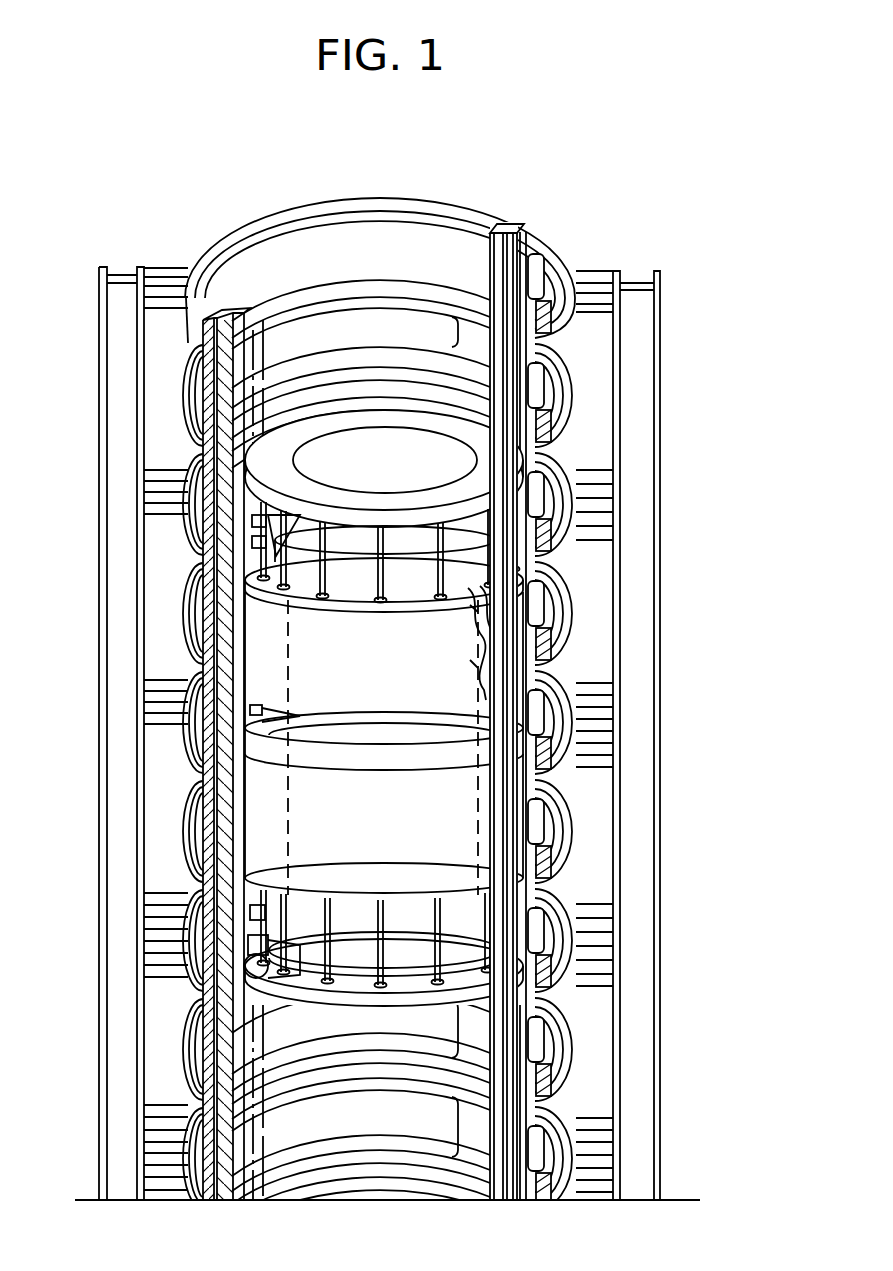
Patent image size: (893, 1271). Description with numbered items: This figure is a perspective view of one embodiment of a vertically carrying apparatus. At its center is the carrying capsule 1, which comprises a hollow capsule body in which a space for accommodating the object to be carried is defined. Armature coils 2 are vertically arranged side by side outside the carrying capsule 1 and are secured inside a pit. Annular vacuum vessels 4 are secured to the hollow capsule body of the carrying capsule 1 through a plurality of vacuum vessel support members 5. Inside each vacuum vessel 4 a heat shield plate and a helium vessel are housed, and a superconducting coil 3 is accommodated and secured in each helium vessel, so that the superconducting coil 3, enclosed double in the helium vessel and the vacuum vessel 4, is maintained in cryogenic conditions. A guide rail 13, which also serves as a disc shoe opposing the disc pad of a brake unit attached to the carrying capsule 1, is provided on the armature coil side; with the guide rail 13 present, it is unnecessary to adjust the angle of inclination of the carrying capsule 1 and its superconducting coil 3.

The carrying capsule 1 is at (402, 410).
The armature coils 2 is at (566, 329).
The superconducting coil 3 is at (505, 685).
The annular vacuum vessels 4 is at (425, 696).
The vacuum vessel support members 5 is at (378, 575).
The guide rail 13 is at (518, 227).